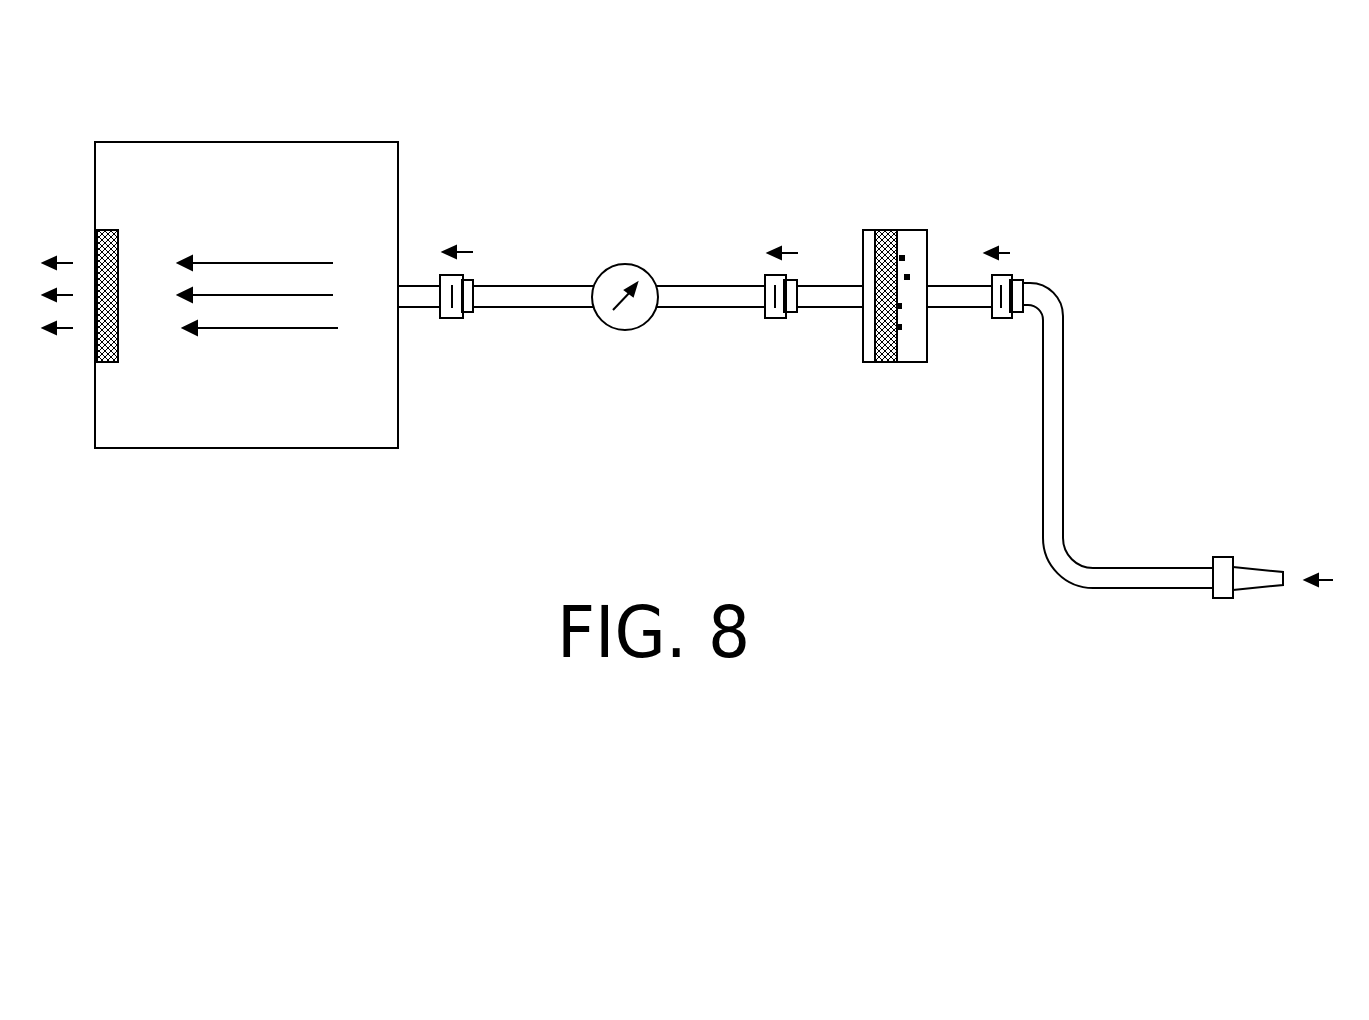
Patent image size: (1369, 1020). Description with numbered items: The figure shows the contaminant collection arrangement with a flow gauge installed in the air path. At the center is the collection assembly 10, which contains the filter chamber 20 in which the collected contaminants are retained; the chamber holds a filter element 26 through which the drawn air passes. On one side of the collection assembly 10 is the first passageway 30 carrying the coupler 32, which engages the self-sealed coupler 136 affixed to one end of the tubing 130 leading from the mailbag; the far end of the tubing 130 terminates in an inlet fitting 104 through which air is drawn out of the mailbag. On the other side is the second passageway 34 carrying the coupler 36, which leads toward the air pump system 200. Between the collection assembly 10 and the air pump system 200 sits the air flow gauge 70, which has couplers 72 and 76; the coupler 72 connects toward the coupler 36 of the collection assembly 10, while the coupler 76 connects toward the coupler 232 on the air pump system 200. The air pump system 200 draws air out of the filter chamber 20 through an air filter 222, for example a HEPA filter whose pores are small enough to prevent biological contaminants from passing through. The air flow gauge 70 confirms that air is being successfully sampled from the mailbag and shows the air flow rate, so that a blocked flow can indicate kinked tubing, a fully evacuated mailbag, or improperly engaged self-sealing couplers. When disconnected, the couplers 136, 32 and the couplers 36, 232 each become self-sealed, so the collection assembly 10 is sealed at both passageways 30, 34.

The collection assembly 10 is at (918, 187).
The filter chamber 20 is at (907, 355).
The filter element 26 is at (887, 232).
The first passageway 30 is at (948, 290).
The coupler 32 is at (1000, 318).
The second passageway 34 is at (848, 285).
The coupler 36 is at (795, 302).
The air flow gauge 70 is at (630, 330).
The coupler 72 is at (780, 318).
The coupler 76 is at (468, 278).
The nozzle connector 104 is at (1222, 577).
The tubing 130 is at (1065, 393).
The self-sealed coupler 136 is at (1020, 285).
The air pump system 200 is at (248, 153).
The air filter 222 is at (118, 345).
The coupler 232 is at (455, 318).